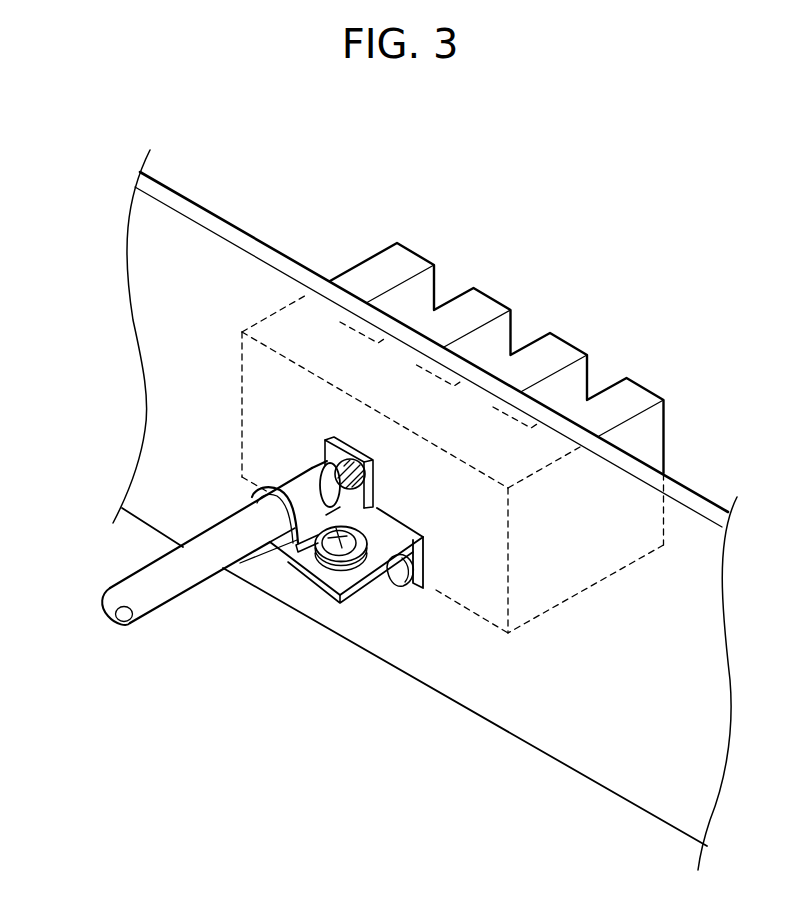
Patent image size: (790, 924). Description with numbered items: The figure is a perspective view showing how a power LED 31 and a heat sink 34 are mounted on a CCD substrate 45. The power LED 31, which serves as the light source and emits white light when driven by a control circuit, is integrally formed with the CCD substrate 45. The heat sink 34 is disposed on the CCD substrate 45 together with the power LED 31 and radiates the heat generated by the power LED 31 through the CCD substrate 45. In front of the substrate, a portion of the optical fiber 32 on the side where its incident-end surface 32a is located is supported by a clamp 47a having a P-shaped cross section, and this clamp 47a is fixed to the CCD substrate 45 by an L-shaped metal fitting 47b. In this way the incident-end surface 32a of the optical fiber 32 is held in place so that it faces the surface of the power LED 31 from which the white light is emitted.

The power LED 31 is at (333, 436).
The optical fiber 32 is at (131, 573).
The incident-end surface 32a is at (362, 460).
The heat sink 34 is at (490, 296).
The CCD substrate 45 is at (692, 487).
The clamp 47a is at (262, 478).
The metal fitting 47b is at (360, 583).